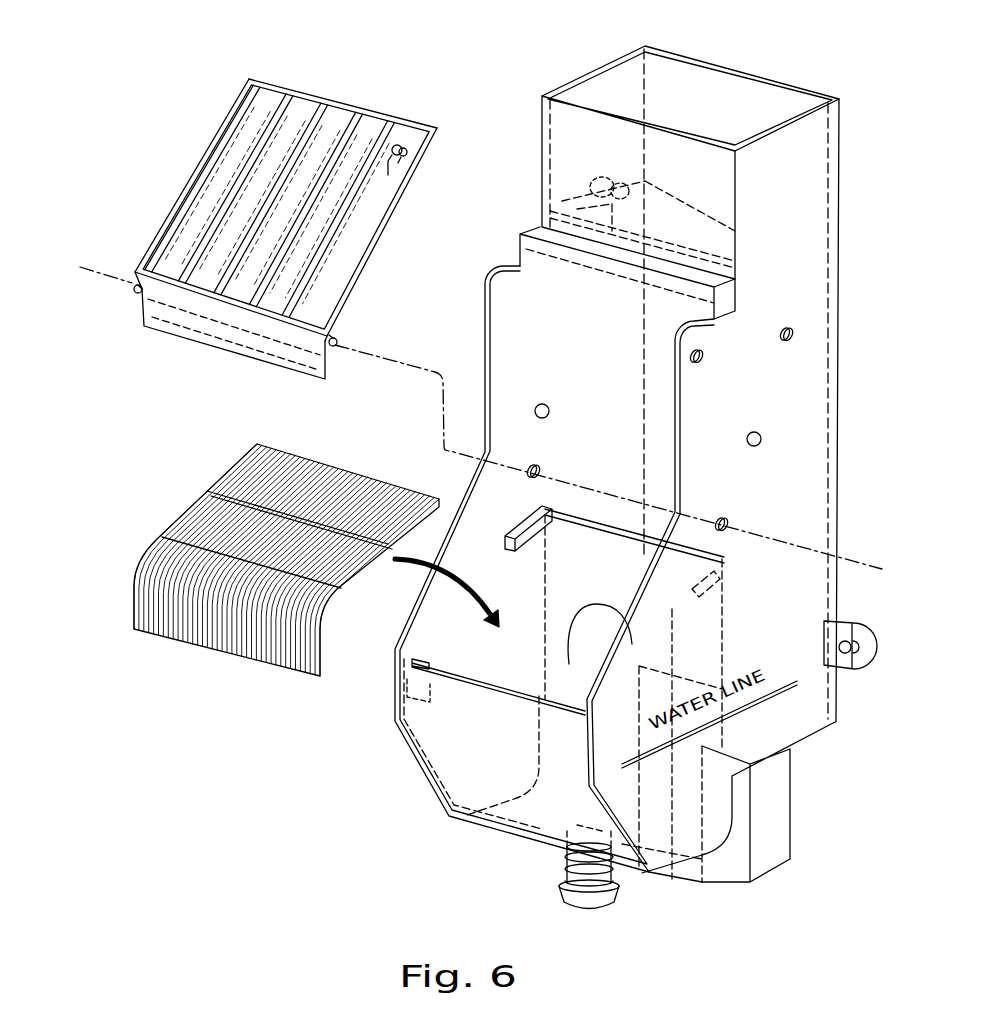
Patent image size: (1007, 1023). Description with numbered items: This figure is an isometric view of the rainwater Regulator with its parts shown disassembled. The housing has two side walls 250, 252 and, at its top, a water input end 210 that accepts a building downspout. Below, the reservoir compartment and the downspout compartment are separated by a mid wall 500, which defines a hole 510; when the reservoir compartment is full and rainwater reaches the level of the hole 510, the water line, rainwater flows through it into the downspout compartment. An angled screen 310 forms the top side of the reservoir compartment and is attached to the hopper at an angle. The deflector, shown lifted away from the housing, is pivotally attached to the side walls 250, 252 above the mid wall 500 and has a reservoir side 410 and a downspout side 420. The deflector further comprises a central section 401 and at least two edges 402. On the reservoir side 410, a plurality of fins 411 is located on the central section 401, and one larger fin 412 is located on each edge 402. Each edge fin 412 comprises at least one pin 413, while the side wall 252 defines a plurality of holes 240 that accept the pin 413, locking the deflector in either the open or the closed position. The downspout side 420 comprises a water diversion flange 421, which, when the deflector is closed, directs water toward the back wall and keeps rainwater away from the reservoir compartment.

The water input end 210 is at (703, 87).
The plurality of holes 240 is at (792, 326).
The side wall 250 is at (535, 405).
The side wall 252 is at (758, 434).
The screen 310 is at (162, 522).
The central section 401 is at (290, 213).
The edges 402 is at (170, 194).
The reservoir side 410 is at (193, 138).
The fins 411 is at (405, 140).
The fin 412 is at (150, 243).
The pin 413 is at (404, 141).
The downspout side 420 is at (412, 225).
The water diversion flange 421 is at (210, 348).
The mid wall 500 is at (538, 556).
The hole 510 is at (577, 667).